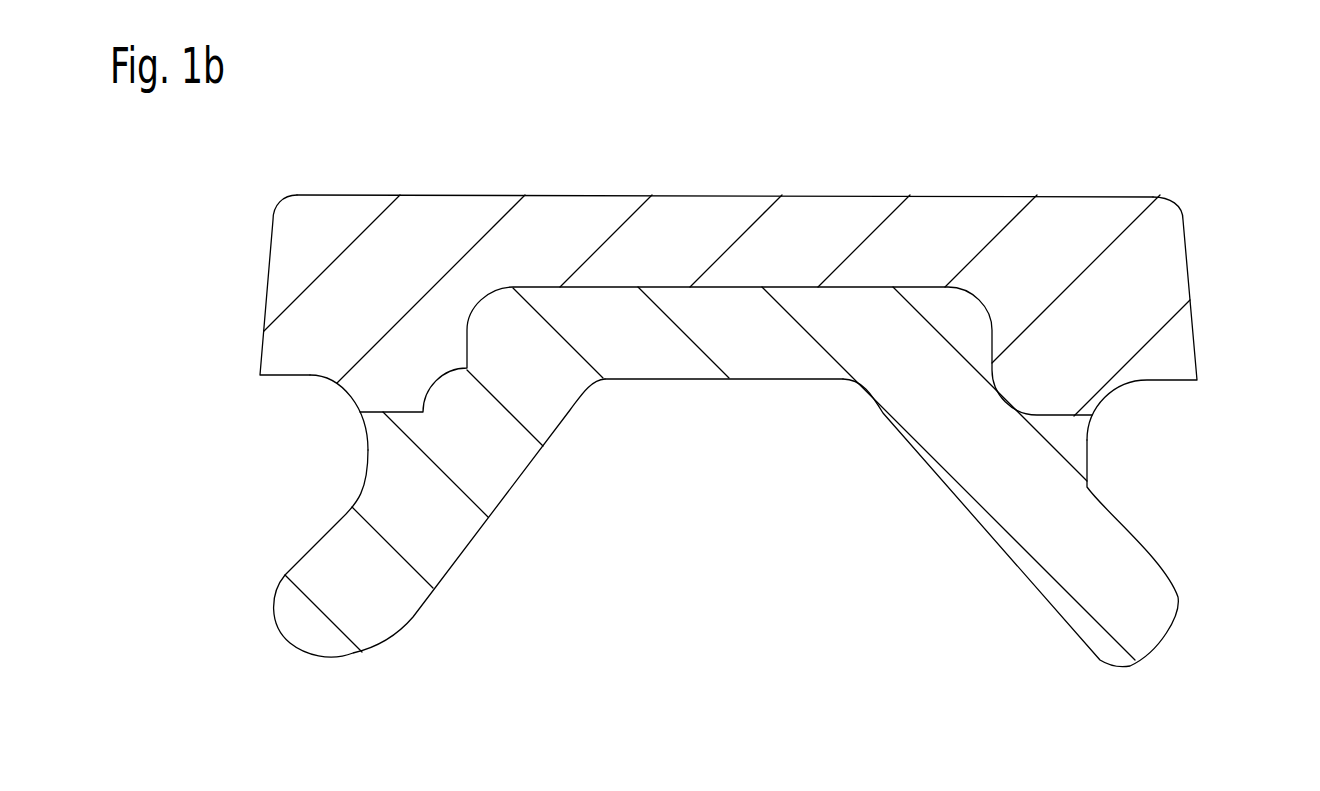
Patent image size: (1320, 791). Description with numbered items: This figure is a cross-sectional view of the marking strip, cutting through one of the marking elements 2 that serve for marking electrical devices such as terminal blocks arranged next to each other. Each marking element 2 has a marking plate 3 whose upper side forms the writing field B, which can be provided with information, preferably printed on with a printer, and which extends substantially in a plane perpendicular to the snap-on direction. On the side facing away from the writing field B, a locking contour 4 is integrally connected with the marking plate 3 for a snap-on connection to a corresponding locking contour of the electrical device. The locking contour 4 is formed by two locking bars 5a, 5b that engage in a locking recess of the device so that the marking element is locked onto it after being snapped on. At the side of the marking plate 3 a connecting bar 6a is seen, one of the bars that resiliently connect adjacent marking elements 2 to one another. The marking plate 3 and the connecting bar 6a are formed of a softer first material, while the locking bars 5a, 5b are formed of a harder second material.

The marking element 2 is at (1180, 200).
The marking plate 3 is at (583, 232).
The writing field B is at (735, 197).
The locking contour 4 is at (777, 355).
The locking bar 5a is at (427, 552).
The locking bar 5b is at (1047, 590).
The connecting bar 6a is at (310, 308).